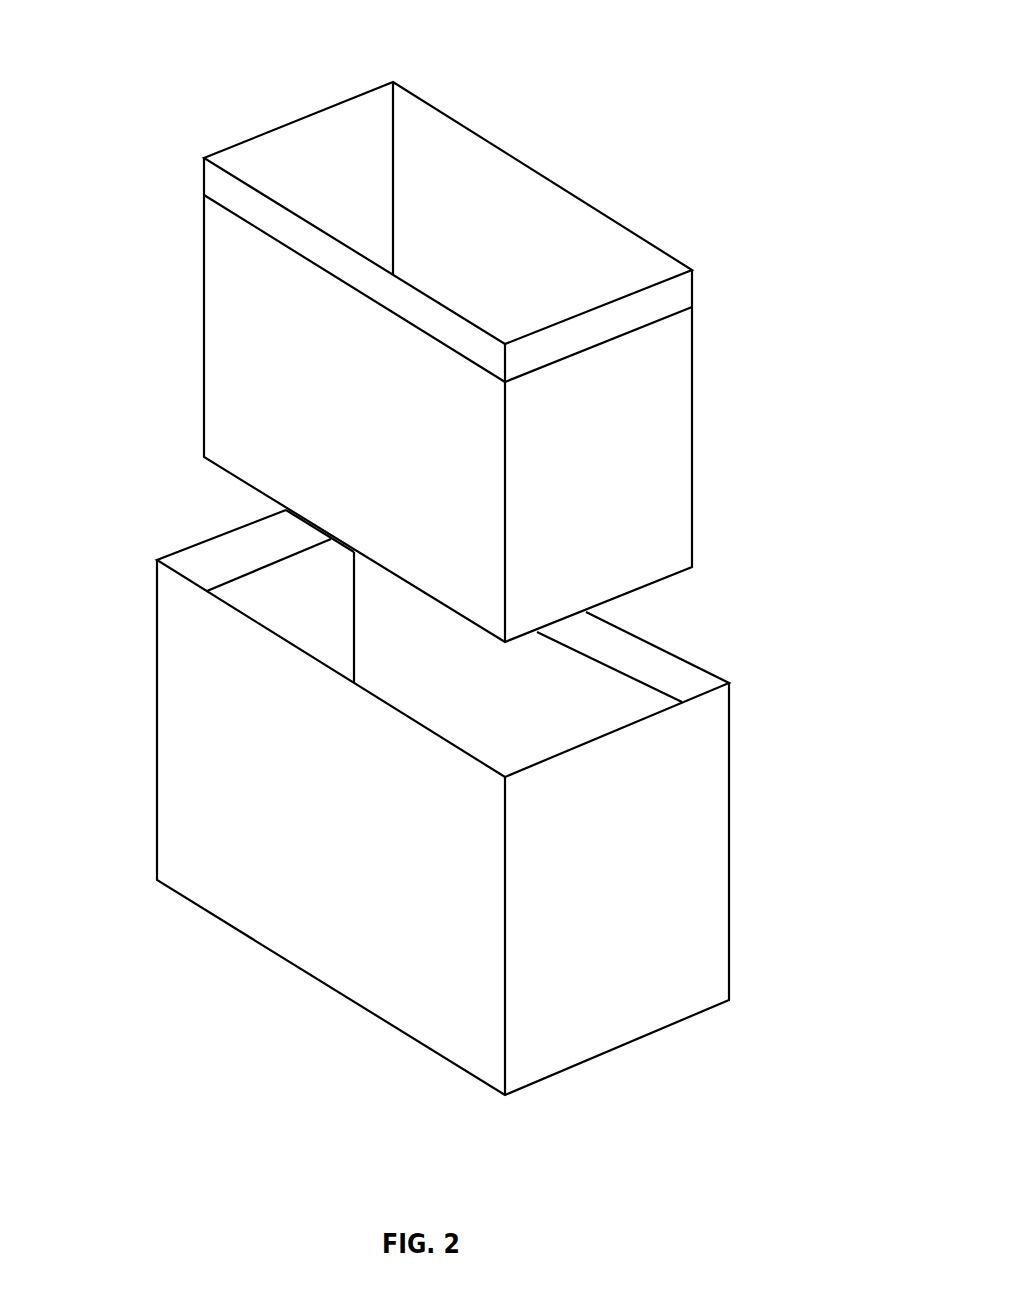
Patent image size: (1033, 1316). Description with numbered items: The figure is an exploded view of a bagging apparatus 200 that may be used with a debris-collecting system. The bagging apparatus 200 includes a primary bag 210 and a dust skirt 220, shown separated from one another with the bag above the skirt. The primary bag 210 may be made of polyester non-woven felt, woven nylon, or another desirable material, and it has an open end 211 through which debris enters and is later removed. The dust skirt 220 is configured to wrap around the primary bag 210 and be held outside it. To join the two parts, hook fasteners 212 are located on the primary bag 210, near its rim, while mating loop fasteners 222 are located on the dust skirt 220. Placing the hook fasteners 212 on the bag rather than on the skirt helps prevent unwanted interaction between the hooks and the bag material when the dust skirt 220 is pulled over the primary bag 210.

The bagging apparatus 200 is at (608, 72).
The primary bag 210 is at (275, 387).
The open end 211 is at (350, 195).
The hook fasteners 212 is at (607, 327).
The dust skirt 220 is at (238, 826).
The loop fasteners 222 is at (678, 674).